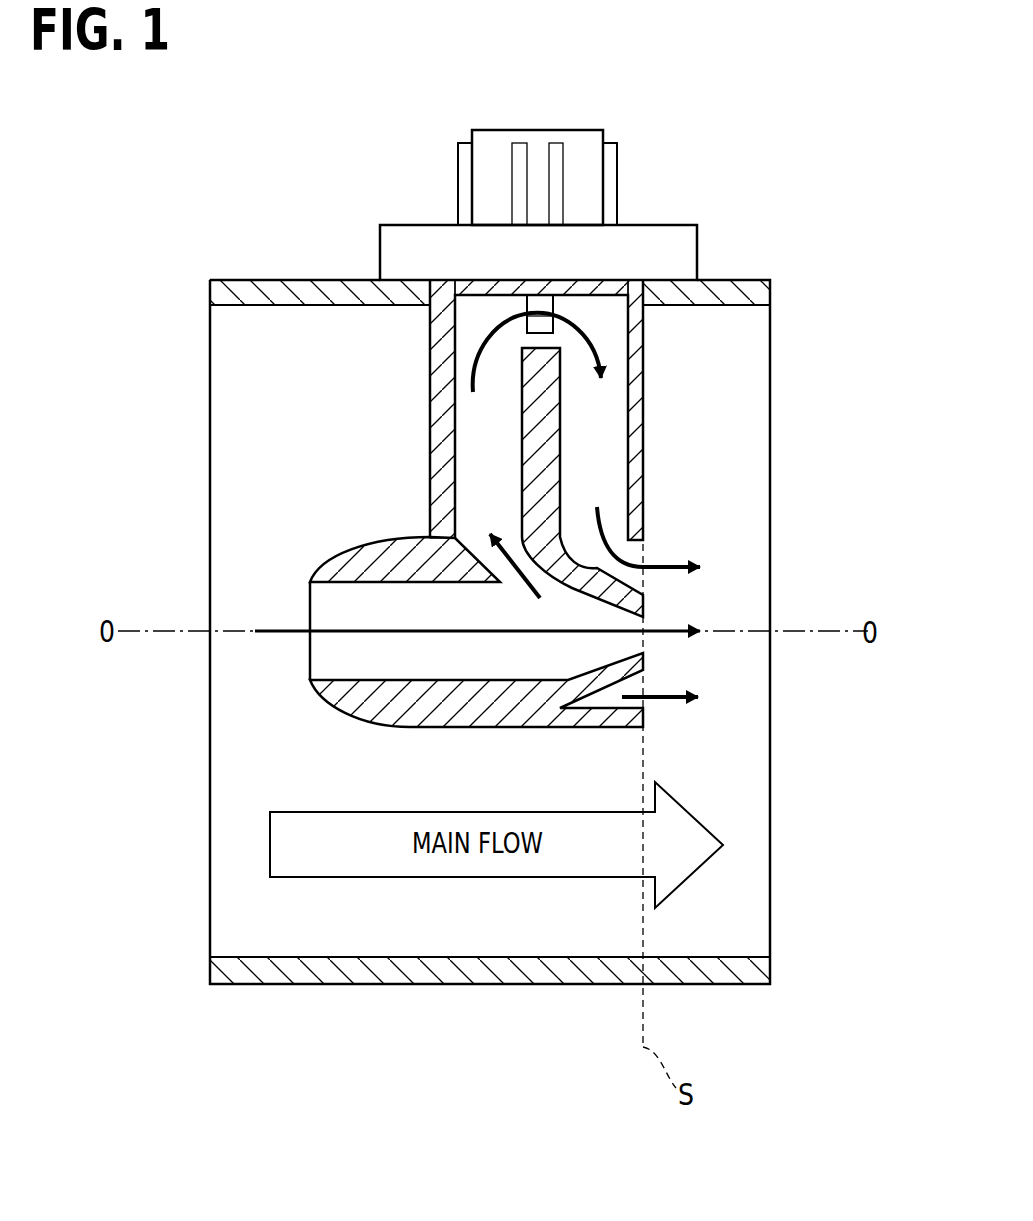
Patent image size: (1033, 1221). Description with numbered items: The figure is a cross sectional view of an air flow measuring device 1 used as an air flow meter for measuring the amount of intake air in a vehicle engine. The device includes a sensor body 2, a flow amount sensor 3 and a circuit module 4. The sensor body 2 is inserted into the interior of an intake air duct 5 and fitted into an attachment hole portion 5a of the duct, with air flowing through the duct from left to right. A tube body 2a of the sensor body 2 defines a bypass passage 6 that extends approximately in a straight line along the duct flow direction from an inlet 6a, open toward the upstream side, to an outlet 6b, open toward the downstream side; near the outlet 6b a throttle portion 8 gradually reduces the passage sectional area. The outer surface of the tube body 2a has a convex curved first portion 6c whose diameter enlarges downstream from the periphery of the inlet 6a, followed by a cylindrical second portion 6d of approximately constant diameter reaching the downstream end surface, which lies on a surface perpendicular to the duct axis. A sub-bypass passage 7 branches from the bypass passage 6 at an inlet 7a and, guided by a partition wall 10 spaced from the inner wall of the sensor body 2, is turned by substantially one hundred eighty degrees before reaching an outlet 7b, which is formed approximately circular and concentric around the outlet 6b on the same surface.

The air flow measuring device 1 is at (408, 178).
The sensor body 2 is at (647, 459).
The tube body 2a is at (550, 715).
The flow amount sensor 3 is at (537, 300).
The circuit module 4 is at (680, 258).
The intake air duct 5 is at (247, 290).
The attachment hole portion 5a is at (634, 298).
The bypass passage 6 is at (380, 662).
The inlet 6a is at (310, 665).
The outlet 6b is at (637, 645).
The first portion 6c is at (332, 708).
The second portion 6d is at (478, 727).
The sub-bypass passage 7 is at (478, 462).
The inlet 7a is at (513, 583).
The outlet 7b is at (640, 552).
The throttle portion 8 is at (643, 590).
The partition wall 10 is at (548, 430).